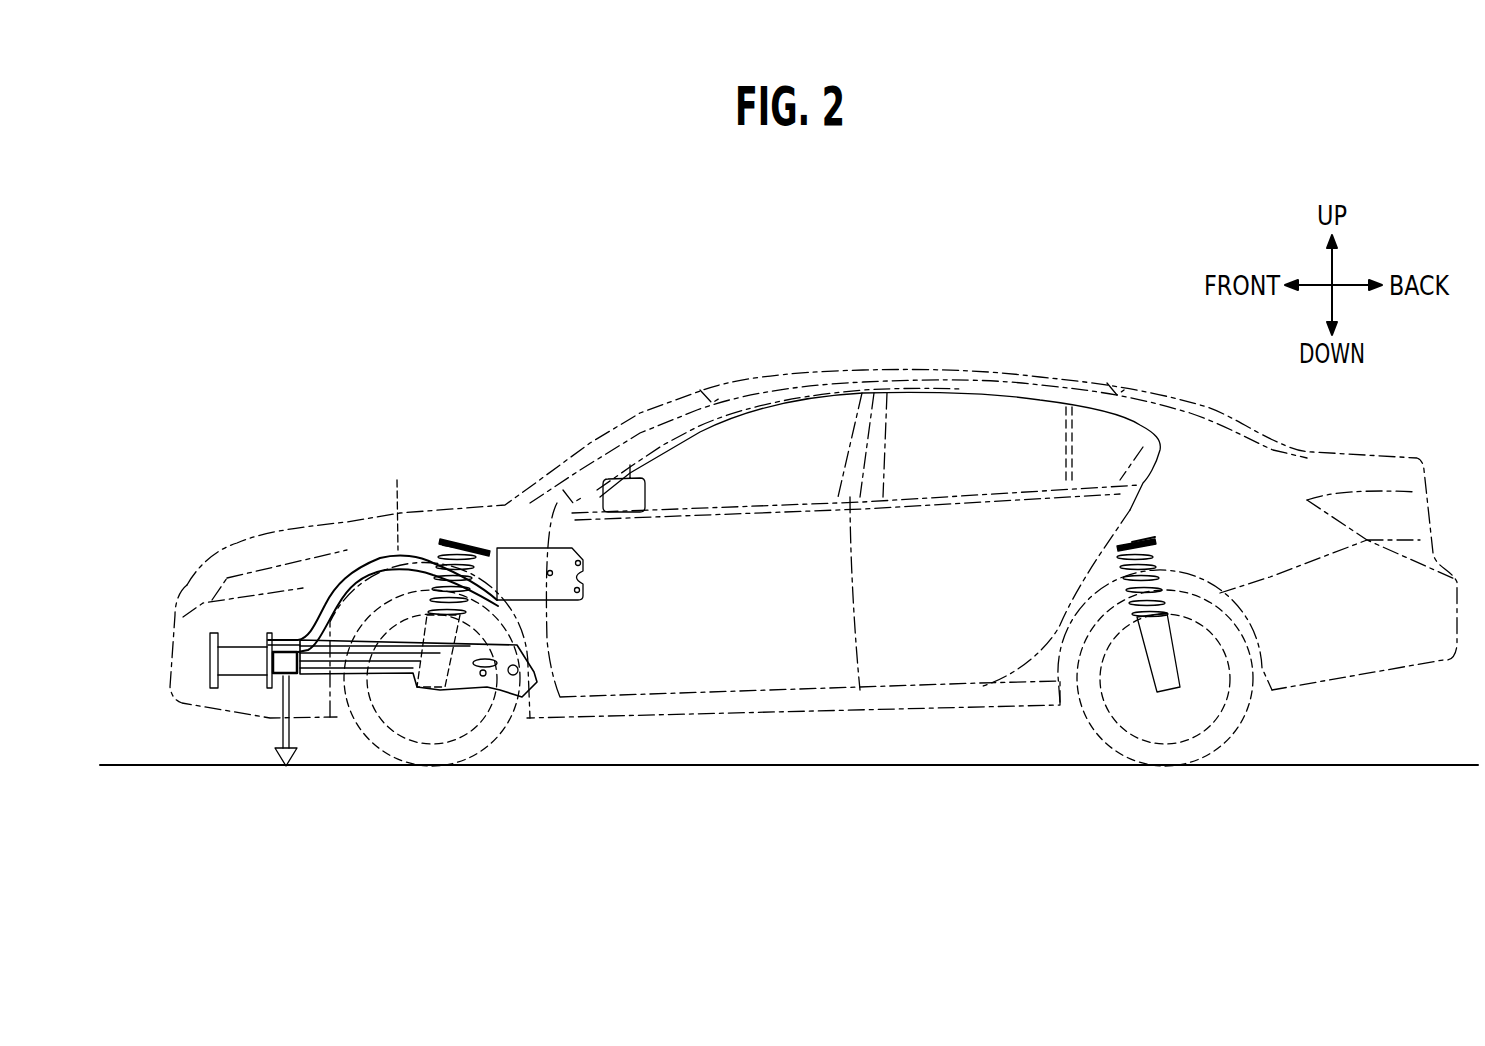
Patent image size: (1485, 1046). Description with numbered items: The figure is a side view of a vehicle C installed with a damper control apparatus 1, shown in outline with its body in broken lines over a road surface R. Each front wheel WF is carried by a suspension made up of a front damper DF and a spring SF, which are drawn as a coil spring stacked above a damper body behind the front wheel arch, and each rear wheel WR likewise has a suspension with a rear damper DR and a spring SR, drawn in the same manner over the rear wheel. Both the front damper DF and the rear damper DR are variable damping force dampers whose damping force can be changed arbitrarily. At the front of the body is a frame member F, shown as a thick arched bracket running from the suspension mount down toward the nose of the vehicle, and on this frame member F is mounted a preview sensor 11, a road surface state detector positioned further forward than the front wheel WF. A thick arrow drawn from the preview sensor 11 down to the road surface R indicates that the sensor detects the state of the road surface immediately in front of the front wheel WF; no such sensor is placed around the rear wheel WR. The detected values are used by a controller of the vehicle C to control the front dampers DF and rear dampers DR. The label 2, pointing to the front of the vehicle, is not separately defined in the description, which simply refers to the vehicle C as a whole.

The suspension device 1 is at (396, 602).
The vehicle 2 is at (781, 584).
The preview sensor 11 is at (283, 661).
The vehicle C is at (467, 404).
The frame member F is at (330, 590).
The spring SF is at (393, 500).
The front damper DF is at (477, 547).
The spring SR is at (1155, 570).
The rear damper DR is at (1133, 540).
The front wheel WF is at (467, 745).
The rear wheel WR is at (1200, 748).
The road surface R is at (942, 768).